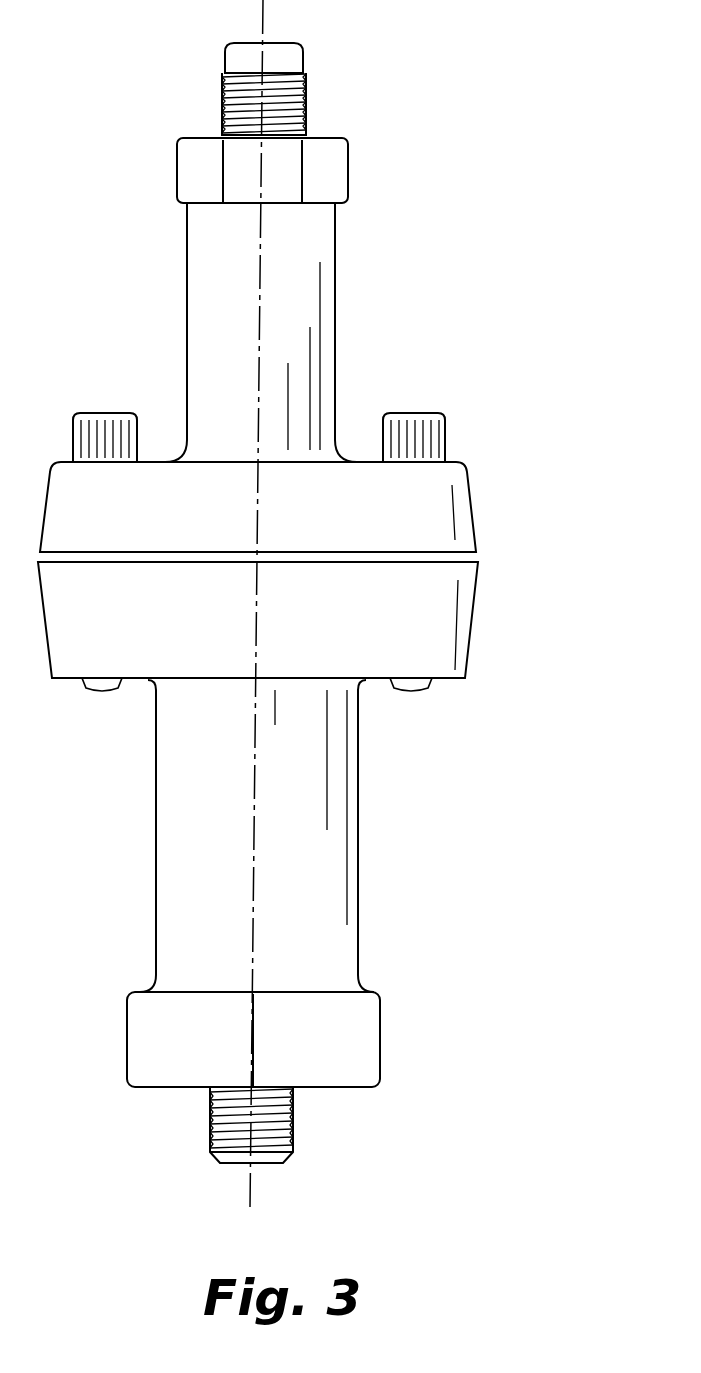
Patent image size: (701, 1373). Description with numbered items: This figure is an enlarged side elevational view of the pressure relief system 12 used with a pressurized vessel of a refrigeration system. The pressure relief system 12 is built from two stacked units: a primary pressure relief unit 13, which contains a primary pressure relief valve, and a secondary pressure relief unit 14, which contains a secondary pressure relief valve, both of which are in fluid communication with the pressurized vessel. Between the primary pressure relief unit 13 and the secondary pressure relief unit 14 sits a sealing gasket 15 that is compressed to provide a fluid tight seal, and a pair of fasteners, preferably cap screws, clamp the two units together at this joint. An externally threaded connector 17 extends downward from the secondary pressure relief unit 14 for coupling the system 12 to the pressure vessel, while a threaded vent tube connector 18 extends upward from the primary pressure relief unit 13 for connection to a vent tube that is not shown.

The pressure relief system 12 is at (470, 230).
The primary pressure relief unit 13 is at (322, 352).
The secondary pressure relief unit 14 is at (330, 847).
The sealing gasket 15 is at (476, 557).
The externally threaded connector 17 is at (270, 1153).
The threaded vent tube connector 18 is at (308, 62).